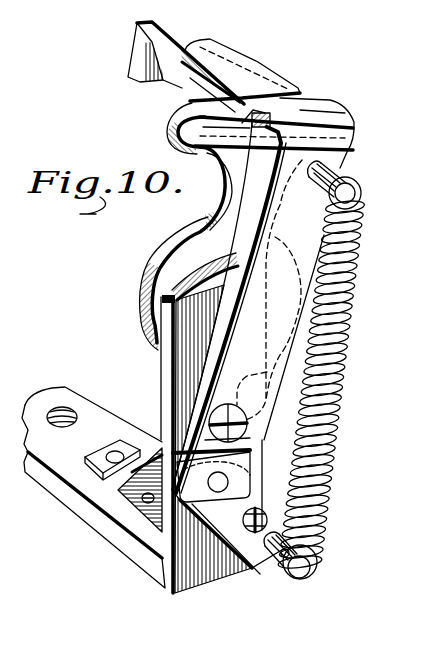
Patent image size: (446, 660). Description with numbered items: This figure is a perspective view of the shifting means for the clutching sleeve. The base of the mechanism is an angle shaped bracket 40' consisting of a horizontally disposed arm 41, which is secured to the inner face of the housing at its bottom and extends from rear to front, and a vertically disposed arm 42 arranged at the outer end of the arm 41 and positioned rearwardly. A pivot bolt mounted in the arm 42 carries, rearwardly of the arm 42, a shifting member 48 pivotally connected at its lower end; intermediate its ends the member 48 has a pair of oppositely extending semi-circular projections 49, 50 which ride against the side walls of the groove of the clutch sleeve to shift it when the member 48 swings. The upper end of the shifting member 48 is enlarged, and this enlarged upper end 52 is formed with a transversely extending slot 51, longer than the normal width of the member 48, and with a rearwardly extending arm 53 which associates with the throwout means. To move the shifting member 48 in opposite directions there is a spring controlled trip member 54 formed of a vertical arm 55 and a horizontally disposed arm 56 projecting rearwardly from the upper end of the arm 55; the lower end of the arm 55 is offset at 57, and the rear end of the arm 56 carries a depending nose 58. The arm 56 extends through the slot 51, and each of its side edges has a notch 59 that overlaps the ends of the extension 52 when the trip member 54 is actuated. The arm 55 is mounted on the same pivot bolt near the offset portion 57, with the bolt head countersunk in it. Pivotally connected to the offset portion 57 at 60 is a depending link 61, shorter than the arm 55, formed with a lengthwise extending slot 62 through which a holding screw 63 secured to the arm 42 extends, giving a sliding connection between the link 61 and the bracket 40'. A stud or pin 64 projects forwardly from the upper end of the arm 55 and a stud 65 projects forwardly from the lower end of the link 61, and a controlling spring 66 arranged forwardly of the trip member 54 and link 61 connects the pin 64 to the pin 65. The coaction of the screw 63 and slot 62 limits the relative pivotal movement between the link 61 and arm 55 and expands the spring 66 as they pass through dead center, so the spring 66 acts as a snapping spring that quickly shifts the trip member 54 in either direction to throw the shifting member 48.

The angle shaped bracket 40' is at (95, 508).
The horizontally disposed arm 41 is at (72, 475).
The vertically disposed arm 42 is at (165, 365).
The shifting member 48 is at (231, 200).
The semi-circular projection 49 is at (152, 262).
The semi-circular projection 50 is at (300, 332).
The transversely extending slot 51 is at (230, 127).
The enlarged upper end 52 is at (343, 113).
The rearwardly extending arm 53 is at (243, 65).
The spring controlled trip member 54 is at (299, 227).
The vertical arm 55 is at (245, 244).
The horizontally disposed arm 56 is at (182, 77).
The offset portion 57 is at (240, 483).
The depending nose 58 is at (133, 58).
The notch 59 is at (256, 127).
The pivotal connection 60 is at (262, 568).
The depending link 61 is at (258, 572).
The lengthwise extending slot 62 is at (250, 497).
The holding screw 63 is at (270, 522).
The stud or pin 64 is at (347, 166).
The stud 65 is at (280, 566).
The controlling spring 66 is at (339, 382).